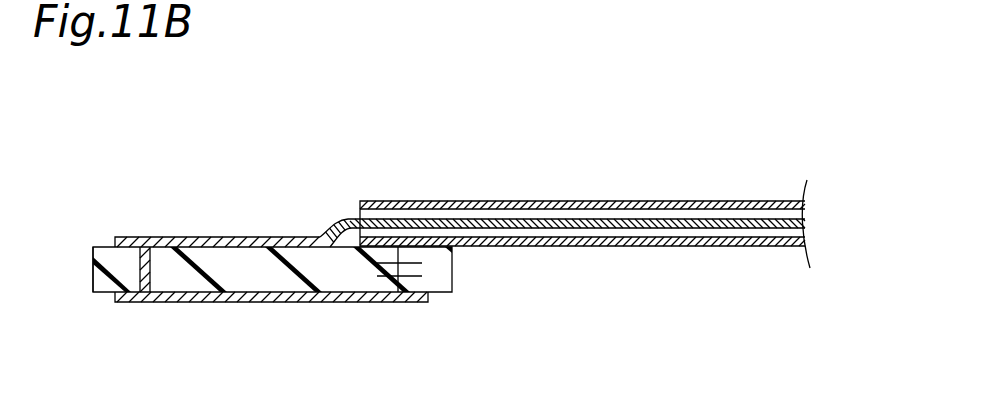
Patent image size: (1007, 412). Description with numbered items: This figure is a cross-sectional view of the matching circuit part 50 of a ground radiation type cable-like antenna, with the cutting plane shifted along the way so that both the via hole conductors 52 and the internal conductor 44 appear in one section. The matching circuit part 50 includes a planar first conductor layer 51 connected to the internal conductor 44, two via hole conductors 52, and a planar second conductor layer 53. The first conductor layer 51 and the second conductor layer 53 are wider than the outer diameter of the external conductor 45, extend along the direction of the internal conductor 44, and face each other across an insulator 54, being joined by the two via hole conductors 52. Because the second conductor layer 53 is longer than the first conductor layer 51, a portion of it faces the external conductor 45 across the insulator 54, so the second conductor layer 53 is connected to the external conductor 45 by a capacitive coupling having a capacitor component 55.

The matching circuit part 50 is at (193, 181).
The first conductor layer 51 is at (145, 237).
The via hole conductors 52 is at (141, 270).
The second conductor layer 53 is at (210, 302).
The insulator 54 is at (270, 237).
The capacitor component 55 is at (414, 278).
The internal conductor 44 is at (400, 219).
The external conductor 45 is at (632, 201).